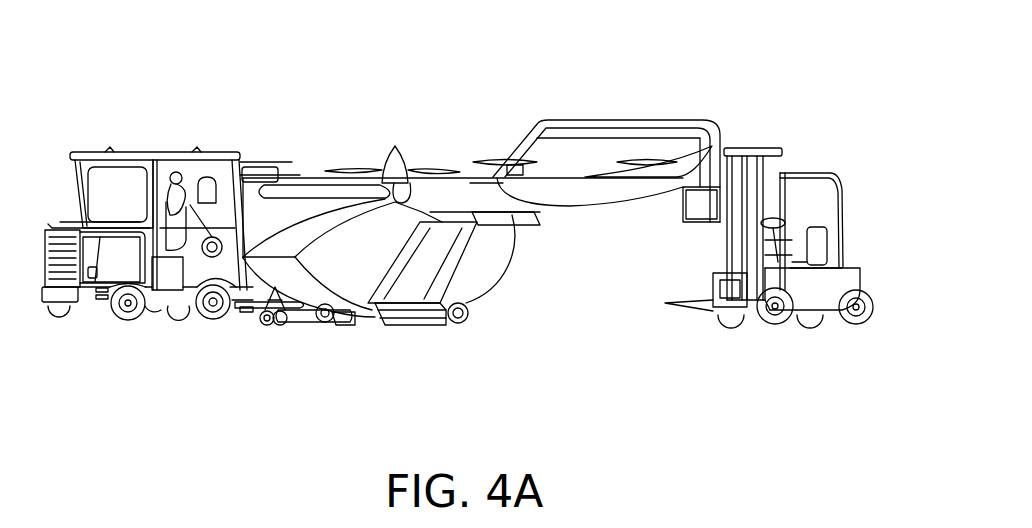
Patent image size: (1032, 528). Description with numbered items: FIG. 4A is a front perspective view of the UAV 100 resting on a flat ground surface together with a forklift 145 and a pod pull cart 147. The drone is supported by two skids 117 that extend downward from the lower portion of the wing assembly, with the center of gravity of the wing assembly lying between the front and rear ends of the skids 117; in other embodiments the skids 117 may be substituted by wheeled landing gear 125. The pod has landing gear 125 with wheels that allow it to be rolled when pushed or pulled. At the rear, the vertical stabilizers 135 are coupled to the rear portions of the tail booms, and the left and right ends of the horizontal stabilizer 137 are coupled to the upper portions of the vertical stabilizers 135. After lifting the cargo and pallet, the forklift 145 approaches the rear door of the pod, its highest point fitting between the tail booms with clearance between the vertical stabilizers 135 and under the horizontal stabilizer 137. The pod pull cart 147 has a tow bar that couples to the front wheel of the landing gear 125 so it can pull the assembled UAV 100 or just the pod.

The UAV 100 is at (396, 46).
The skids 117 is at (436, 318).
The landing gear 125 is at (323, 320).
The vertical stabilizers 135 is at (523, 152).
The horizontal stabilizer 137 is at (617, 120).
The forklift 145 is at (802, 288).
The pod pull cart 147 is at (121, 322).